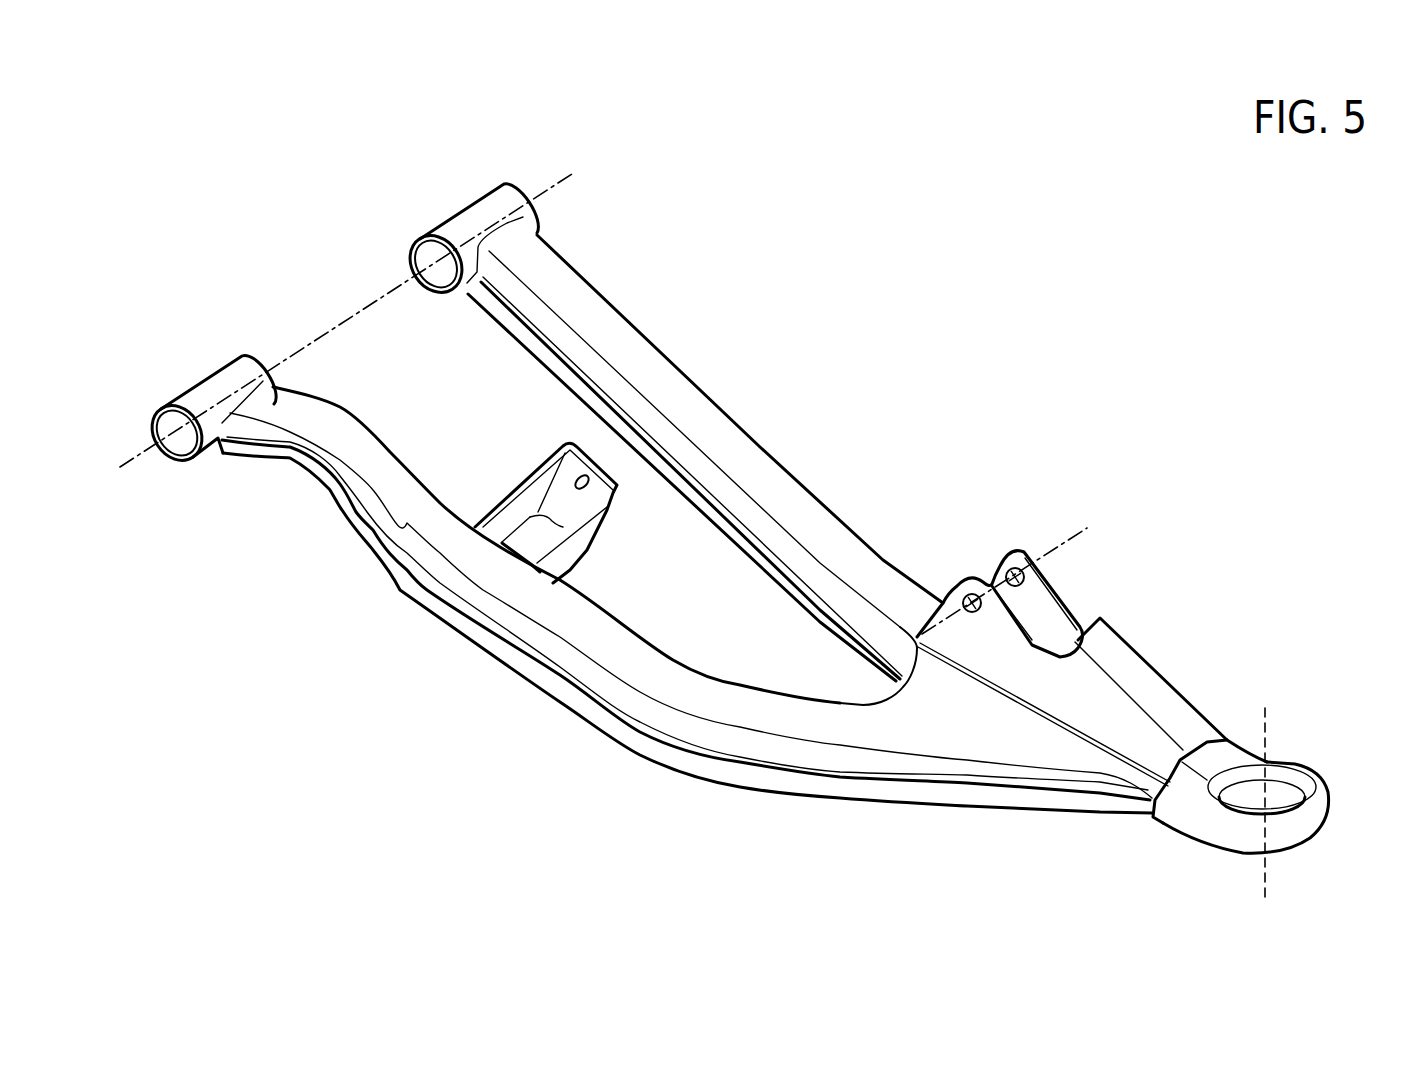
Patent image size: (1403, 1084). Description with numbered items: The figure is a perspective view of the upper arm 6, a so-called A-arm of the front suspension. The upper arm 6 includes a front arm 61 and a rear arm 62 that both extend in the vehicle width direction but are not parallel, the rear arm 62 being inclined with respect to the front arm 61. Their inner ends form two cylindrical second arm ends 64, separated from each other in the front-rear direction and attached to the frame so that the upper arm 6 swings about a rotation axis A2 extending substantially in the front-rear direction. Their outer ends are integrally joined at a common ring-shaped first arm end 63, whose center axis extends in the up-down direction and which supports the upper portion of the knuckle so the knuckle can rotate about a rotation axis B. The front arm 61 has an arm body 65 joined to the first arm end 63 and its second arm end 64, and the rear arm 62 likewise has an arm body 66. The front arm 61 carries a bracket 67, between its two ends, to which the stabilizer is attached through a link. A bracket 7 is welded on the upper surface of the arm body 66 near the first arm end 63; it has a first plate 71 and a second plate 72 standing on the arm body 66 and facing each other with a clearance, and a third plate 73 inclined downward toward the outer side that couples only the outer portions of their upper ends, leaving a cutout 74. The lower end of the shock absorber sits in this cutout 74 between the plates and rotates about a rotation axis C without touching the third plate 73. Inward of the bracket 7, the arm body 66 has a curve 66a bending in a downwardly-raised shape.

The upper arm 6 is at (700, 248).
The bracket 7 is at (1205, 580).
The front arm 61 is at (610, 711).
The rear arm 62 is at (688, 377).
The first arm end 63 is at (1318, 789).
The second arm end 64 is at (473, 217).
The arm body 65 is at (530, 630).
The arm body 66 is at (740, 450).
The curve 66a is at (868, 577).
The bracket 67 is at (523, 477).
The first plate 71 is at (1073, 693).
The second plate 72 is at (1067, 610).
The third plate 73 is at (1137, 673).
The cutout 74 is at (1047, 617).
The rotation axis A2 is at (310, 337).
The rotation axis B is at (1267, 723).
The rotation axis C is at (1075, 522).